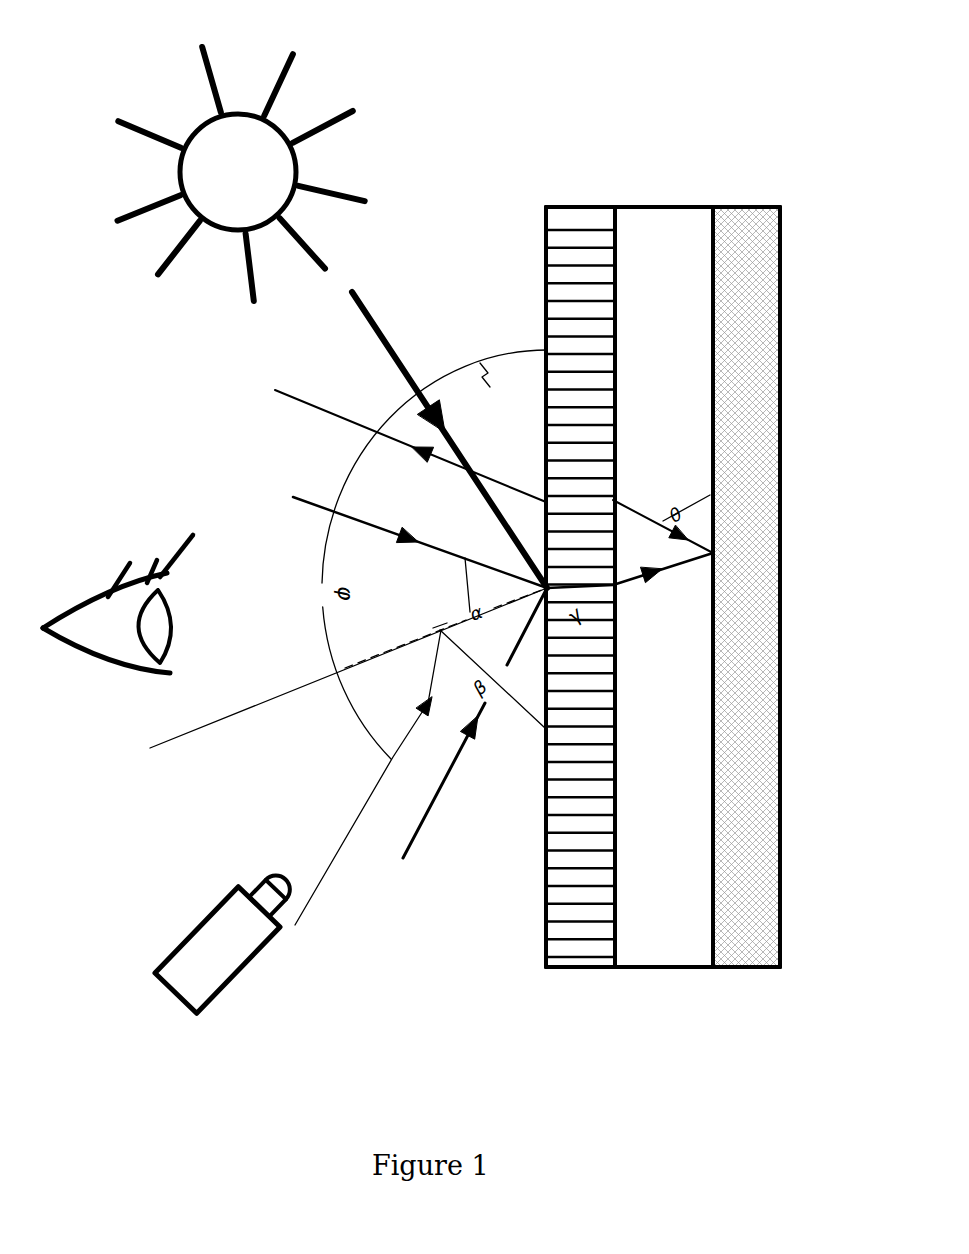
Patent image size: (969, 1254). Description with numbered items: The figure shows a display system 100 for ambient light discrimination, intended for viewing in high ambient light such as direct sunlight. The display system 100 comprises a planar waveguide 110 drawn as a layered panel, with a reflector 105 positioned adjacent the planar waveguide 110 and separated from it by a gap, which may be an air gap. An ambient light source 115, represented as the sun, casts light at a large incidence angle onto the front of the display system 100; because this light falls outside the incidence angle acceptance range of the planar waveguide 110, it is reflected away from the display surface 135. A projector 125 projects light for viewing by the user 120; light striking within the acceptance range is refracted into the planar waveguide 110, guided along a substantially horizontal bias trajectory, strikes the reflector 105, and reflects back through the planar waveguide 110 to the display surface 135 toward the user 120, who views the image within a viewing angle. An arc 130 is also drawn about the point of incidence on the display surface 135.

The display system 100 is at (694, 110).
The reflector 105 is at (780, 202).
The planar waveguide 110 is at (614, 202).
The ambient light source 115 is at (298, 168).
The user 120 is at (122, 663).
The projector 125 is at (193, 1017).
The angular range arc 130 is at (478, 358).
The display surface 135 is at (546, 873).